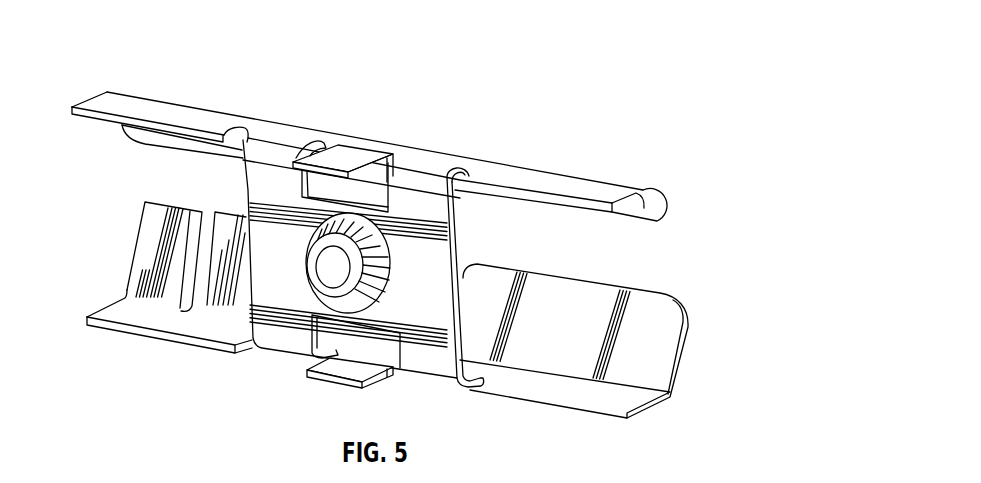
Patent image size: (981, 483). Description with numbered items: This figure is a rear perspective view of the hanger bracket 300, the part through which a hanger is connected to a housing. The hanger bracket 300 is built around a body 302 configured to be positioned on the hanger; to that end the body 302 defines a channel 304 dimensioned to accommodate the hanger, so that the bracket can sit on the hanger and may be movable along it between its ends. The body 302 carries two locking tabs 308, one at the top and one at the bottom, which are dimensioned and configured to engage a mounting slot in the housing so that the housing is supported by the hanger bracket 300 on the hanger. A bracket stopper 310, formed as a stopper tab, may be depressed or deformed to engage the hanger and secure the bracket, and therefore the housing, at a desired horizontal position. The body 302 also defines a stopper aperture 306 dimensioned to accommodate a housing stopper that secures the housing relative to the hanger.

The hanger bracket 300 is at (592, 35).
The body 302 is at (432, 165).
The channel 304 is at (652, 243).
The stopper aperture 306 is at (336, 300).
The locking tab 308 is at (333, 161).
The bracket stopper 310 is at (148, 229).